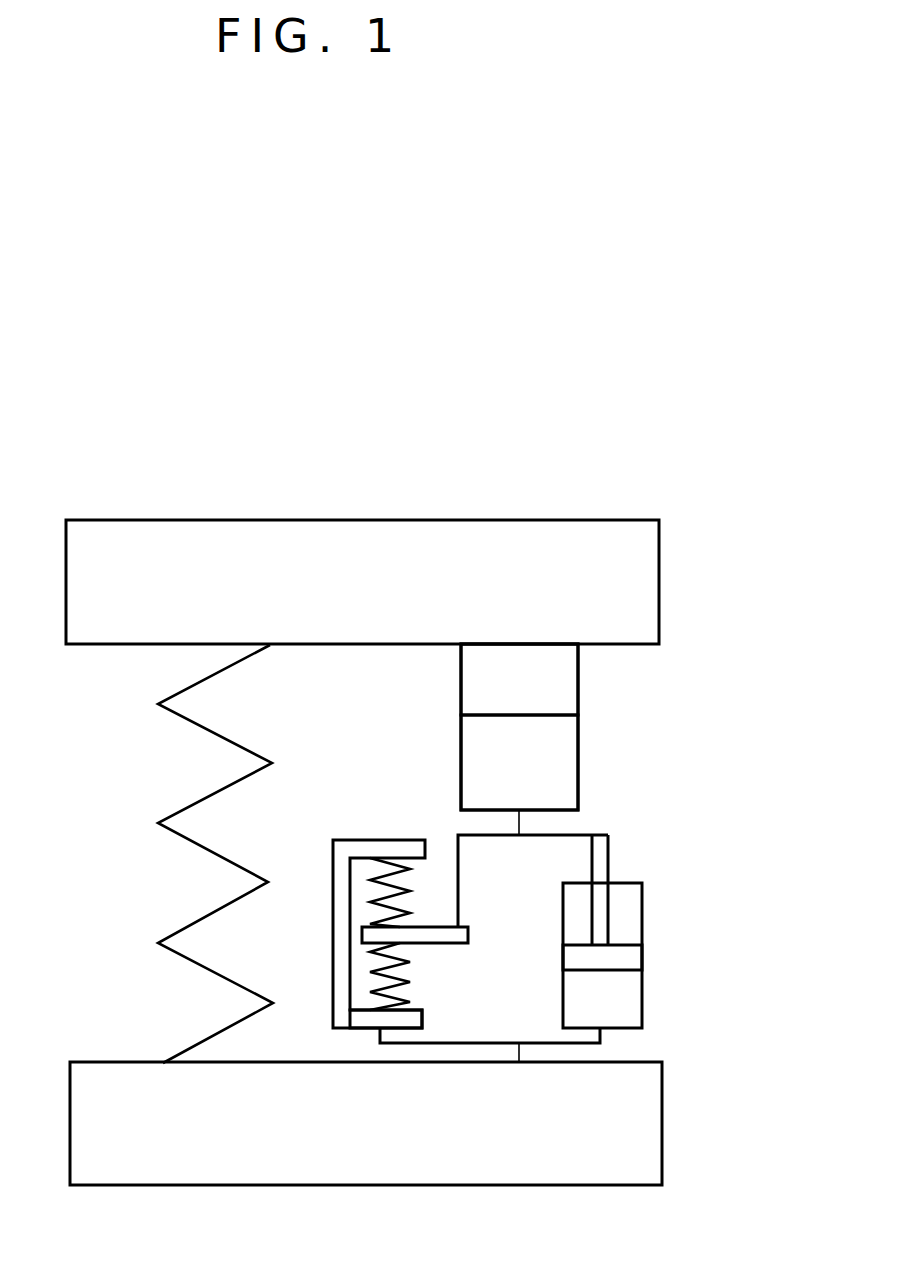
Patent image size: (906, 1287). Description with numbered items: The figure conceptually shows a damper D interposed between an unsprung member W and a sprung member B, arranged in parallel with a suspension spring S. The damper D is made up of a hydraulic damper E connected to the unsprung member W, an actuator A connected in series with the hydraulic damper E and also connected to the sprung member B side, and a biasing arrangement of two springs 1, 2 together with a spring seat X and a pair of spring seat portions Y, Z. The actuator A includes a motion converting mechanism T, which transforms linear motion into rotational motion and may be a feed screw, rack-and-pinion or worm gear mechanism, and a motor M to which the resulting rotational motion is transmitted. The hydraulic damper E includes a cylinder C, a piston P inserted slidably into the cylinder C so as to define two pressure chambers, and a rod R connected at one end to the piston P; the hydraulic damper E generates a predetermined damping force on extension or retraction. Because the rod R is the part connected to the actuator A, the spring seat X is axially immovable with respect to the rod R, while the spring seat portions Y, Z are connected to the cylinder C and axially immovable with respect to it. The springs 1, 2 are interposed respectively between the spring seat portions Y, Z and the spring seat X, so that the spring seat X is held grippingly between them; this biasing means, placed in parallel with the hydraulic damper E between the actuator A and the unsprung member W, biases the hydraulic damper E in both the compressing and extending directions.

The sprung member B is at (659, 556).
The unsprung member W is at (662, 1112).
The suspension spring S is at (173, 813).
The damper D is at (690, 744).
The actuator A is at (603, 717).
The motor M is at (578, 683).
The motion converting mechanism T is at (578, 756).
The spring seat X is at (470, 935).
The spring seat portion Y is at (390, 840).
The spring seat portion Z is at (420, 1015).
The spring 1 is at (408, 877).
The spring 2 is at (412, 980).
The hydraulic damper E is at (693, 944).
The cylinder C is at (642, 995).
The piston P is at (630, 958).
The rod R is at (608, 867).